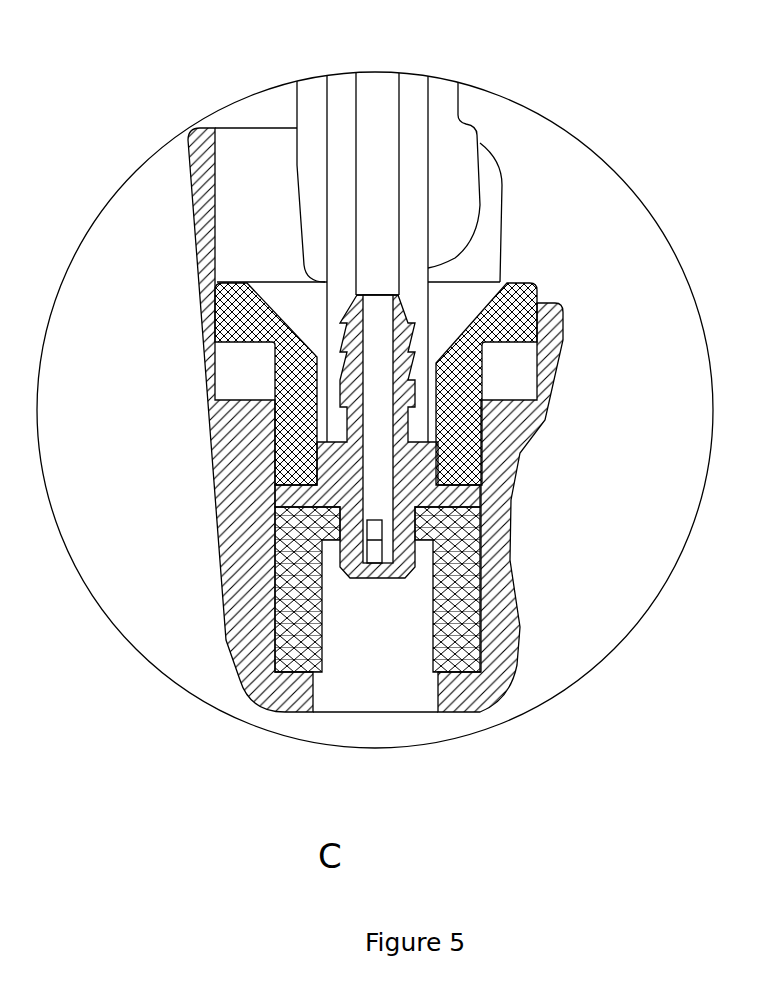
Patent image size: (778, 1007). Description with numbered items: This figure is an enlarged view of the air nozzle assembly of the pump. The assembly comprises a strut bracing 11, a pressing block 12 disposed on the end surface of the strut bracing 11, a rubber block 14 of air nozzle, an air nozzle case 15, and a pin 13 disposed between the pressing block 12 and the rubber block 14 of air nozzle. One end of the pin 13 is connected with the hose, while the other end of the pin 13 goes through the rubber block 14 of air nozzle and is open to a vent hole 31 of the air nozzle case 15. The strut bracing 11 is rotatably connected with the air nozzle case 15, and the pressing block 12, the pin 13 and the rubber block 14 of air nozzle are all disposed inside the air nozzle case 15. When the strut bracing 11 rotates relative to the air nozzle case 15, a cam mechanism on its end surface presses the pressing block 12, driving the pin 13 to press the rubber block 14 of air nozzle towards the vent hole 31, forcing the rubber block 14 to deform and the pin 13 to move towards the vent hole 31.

The strut bracing 11 is at (448, 97).
The pressing block 12 is at (535, 295).
The pin 13 is at (420, 485).
The rubber block of air nozzle 14 is at (465, 547).
The air nozzle case 15 is at (505, 677).
The vent hole 31 is at (424, 703).